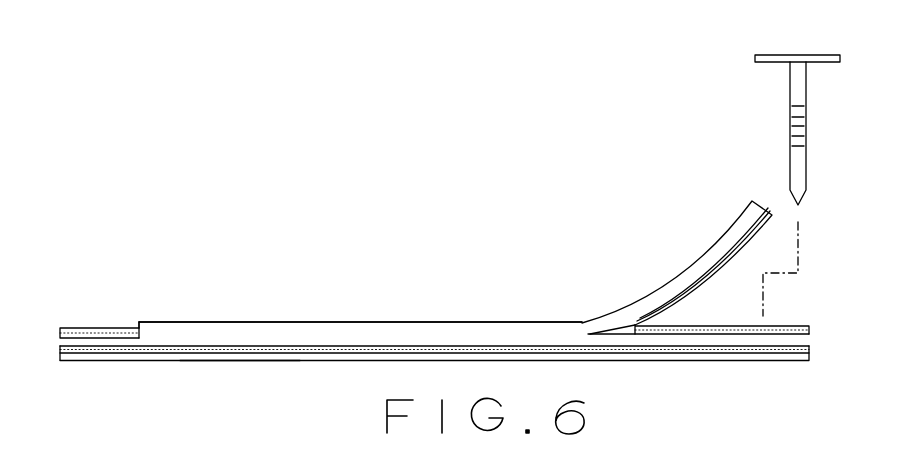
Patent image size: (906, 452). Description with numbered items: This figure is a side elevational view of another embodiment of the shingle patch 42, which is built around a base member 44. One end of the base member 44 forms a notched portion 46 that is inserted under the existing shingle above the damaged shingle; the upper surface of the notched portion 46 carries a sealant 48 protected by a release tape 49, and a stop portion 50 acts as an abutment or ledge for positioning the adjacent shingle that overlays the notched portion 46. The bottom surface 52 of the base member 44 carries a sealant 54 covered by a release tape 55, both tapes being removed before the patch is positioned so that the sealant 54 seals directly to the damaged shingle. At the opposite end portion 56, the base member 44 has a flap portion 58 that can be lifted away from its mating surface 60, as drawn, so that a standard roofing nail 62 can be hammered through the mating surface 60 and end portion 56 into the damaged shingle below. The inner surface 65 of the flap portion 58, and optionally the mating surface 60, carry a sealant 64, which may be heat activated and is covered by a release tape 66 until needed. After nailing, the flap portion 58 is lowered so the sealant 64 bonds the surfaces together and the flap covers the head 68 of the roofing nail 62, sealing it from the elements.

The shingle patch 42 is at (382, 278).
The base member 44 is at (301, 322).
The notched portion 46 is at (60, 346).
The sealant 48 is at (60, 336).
The release tape 49 is at (85, 328).
The stop portion 50 is at (139, 322).
The bottom surface 52 is at (487, 346).
The sealant 54 is at (809, 353).
The release tape 55 is at (225, 358).
The end portion 56 is at (805, 343).
The flap portion 58 is at (710, 247).
The mating surface 60 is at (727, 337).
The roofing nail 62 is at (807, 72).
The sealant 64 is at (753, 202).
The inner surface 65 is at (662, 302).
The release tape 66 is at (775, 215).
The head 68 is at (810, 54).